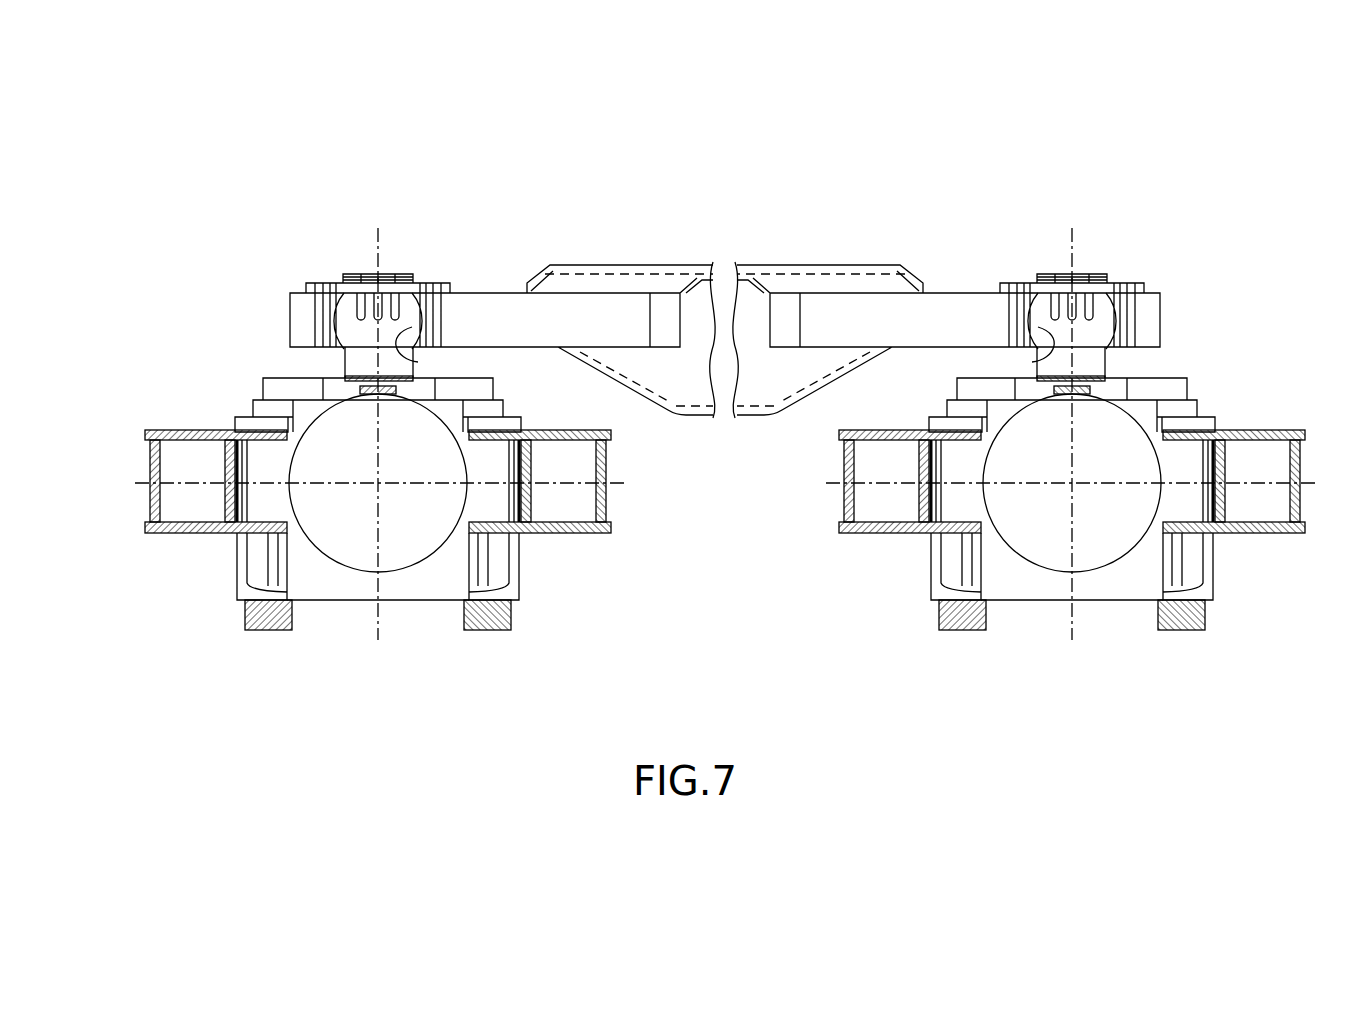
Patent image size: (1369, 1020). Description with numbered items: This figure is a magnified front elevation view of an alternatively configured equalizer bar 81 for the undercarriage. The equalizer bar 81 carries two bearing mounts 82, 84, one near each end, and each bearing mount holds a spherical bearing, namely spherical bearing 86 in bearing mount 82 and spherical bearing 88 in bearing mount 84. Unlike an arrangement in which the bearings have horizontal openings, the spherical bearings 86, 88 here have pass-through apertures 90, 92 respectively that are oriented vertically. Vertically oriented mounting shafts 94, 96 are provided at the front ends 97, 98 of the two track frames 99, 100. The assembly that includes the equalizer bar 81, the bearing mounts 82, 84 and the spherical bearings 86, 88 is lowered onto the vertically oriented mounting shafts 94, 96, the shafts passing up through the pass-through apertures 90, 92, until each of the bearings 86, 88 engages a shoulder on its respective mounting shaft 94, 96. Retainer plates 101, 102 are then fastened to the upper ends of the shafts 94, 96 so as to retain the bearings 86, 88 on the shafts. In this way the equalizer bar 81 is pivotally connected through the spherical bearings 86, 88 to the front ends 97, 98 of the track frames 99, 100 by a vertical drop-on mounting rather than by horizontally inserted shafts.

The equalizer bar 81 is at (845, 178).
The bearing mount 82 is at (480, 293).
The bearing mount 84 is at (952, 293).
The spherical bearing 86 is at (428, 283).
The spherical bearing 88 is at (1017, 283).
The pass-through aperture 90 is at (418, 362).
The pass-through aperture 92 is at (1032, 362).
The mounting shaft 94 is at (345, 355).
The mounting shaft 96 is at (1105, 362).
The front end 97 is at (150, 481).
The front end 98 is at (1302, 468).
The track frame 99 is at (235, 565).
The track frame 100 is at (1213, 560).
The retainer plate 101 is at (355, 275).
The retainer plate 102 is at (1095, 275).